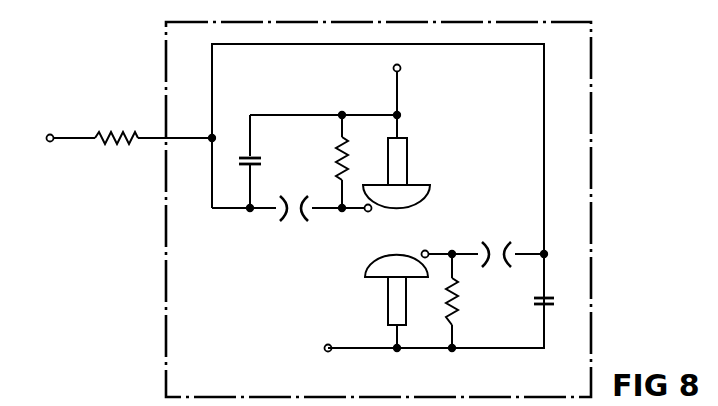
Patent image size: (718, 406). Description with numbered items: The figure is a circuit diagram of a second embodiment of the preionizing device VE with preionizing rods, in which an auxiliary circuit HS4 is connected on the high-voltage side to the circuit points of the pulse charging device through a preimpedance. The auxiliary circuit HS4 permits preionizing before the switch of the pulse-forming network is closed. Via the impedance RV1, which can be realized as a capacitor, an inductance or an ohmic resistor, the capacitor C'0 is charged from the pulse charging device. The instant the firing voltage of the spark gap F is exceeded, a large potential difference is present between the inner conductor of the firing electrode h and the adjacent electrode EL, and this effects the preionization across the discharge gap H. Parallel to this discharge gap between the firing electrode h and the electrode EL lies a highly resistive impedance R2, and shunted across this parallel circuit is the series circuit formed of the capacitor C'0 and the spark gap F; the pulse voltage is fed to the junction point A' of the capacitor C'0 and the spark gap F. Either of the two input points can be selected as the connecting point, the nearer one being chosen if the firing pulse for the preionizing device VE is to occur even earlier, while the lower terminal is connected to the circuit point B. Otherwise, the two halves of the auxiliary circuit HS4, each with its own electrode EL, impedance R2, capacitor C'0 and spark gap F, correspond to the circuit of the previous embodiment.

The preionizing device VE is at (631, 132).
The auxiliary circuit HS4 is at (259, 258).
The impedance RV1 is at (113, 143).
The capacitor C'0 is at (415, 231).
The highly resistive impedance R2 is at (472, 300).
The junction point of C'0 and F A' is at (408, 101).
The adjacent electrode EL is at (430, 191).
The spark gap F is at (293, 211).
The firing electrode h is at (368, 212).
The discharge gap H is at (410, 241).
The circuit point B is at (435, 362).